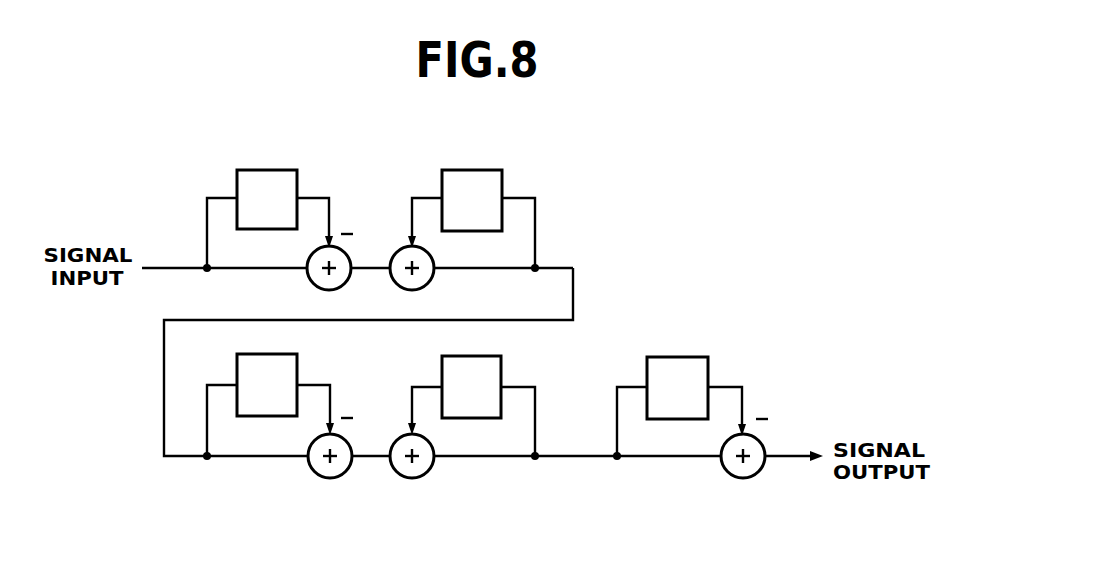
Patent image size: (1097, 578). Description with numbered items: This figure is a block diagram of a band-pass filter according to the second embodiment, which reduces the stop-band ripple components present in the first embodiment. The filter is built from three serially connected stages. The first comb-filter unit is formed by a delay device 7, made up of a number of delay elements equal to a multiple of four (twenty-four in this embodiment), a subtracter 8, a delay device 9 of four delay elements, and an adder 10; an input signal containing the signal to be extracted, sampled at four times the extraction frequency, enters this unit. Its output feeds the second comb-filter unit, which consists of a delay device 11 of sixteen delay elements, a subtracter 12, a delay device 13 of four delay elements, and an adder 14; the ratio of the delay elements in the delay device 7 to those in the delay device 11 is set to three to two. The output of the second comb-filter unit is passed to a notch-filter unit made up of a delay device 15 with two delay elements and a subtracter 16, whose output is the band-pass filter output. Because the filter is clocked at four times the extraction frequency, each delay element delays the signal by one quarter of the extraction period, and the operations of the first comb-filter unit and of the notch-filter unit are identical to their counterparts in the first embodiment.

The delay device 7 is at (276, 170).
The subtracter 8 is at (310, 278).
The delay device 9 is at (480, 170).
The adder 10 is at (430, 283).
The delay device 11 is at (297, 360).
The subtracter 12 is at (311, 472).
The delay device 13 is at (501, 368).
The adder 14 is at (427, 467).
The delay device 15 is at (708, 367).
The subtracter 16 is at (722, 468).